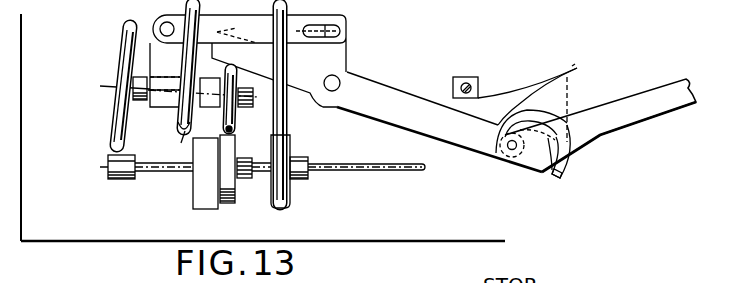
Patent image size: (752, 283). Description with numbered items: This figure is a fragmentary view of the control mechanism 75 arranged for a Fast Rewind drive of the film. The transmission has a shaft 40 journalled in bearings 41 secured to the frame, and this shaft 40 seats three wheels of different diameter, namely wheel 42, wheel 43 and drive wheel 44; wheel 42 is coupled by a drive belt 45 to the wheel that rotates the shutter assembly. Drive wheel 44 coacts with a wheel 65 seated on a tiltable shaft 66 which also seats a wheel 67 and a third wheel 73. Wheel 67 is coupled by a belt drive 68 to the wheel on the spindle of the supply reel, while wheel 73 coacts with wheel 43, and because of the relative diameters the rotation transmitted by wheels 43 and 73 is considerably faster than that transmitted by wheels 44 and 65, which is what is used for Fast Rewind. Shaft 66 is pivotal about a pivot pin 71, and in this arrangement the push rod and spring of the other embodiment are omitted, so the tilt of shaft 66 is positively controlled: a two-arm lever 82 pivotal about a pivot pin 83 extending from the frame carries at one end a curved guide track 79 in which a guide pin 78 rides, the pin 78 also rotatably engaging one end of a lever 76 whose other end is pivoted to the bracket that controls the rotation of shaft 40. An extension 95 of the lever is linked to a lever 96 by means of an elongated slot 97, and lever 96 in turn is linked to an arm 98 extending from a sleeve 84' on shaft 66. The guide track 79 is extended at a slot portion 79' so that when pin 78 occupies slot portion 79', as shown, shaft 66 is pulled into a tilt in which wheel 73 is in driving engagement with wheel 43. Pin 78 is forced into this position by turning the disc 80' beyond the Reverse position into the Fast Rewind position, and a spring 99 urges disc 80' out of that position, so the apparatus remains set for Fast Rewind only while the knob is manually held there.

The shaft 40 is at (353, 170).
The bearings 41 is at (200, 203).
The wheel 42 is at (282, 190).
The wheel 43 is at (235, 197).
The drive wheel 44 is at (110, 173).
The drive belt 45 is at (282, 122).
The wheel 65 is at (113, 117).
The shaft 66 is at (143, 80).
The wheel 67 is at (182, 122).
The belt drive 68 is at (202, 13).
The pivot pin 71 is at (183, 147).
The wheel 73 is at (238, 115).
The control mechanism 75 is at (572, 64).
The lever 76 is at (635, 102).
The guide pin 78 is at (508, 150).
The guide track 79 is at (566, 171).
The slot portion 79' is at (531, 161).
The disc 80' is at (587, 105).
The two-arm lever 82 is at (407, 126).
The pivot pin 83 is at (340, 83).
The sleeve 84' is at (179, 106).
The extension 95 is at (337, 53).
The lever 96 is at (293, 22).
The elongated slot 97 is at (313, 32).
The arm 98 is at (160, 48).
The spring 99 is at (513, 93).